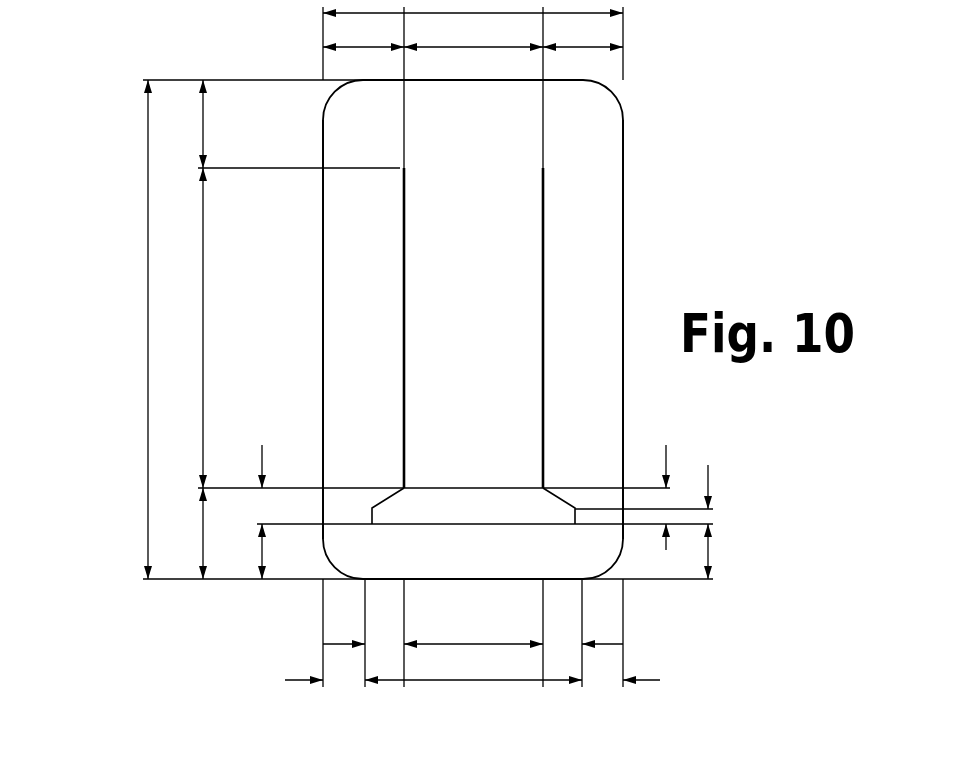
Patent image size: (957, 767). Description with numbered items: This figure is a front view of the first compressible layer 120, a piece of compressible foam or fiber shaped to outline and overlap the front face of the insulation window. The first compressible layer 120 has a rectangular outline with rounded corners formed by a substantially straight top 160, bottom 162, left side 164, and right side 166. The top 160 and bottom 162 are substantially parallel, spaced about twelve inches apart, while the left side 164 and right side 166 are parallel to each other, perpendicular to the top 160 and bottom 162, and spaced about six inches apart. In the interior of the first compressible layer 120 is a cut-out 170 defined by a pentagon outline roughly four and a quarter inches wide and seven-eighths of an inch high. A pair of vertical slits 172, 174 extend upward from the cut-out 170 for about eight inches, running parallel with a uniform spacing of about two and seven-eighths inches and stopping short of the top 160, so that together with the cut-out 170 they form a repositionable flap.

The first compressible layer 120 is at (107, 137).
The top 160 is at (553, 80).
The bottom 162 is at (515, 580).
The left side 164 is at (623, 198).
The right side 166 is at (323, 318).
The cut-out 170 is at (469, 497).
The slit 172 is at (404, 292).
The slit 174 is at (543, 353).